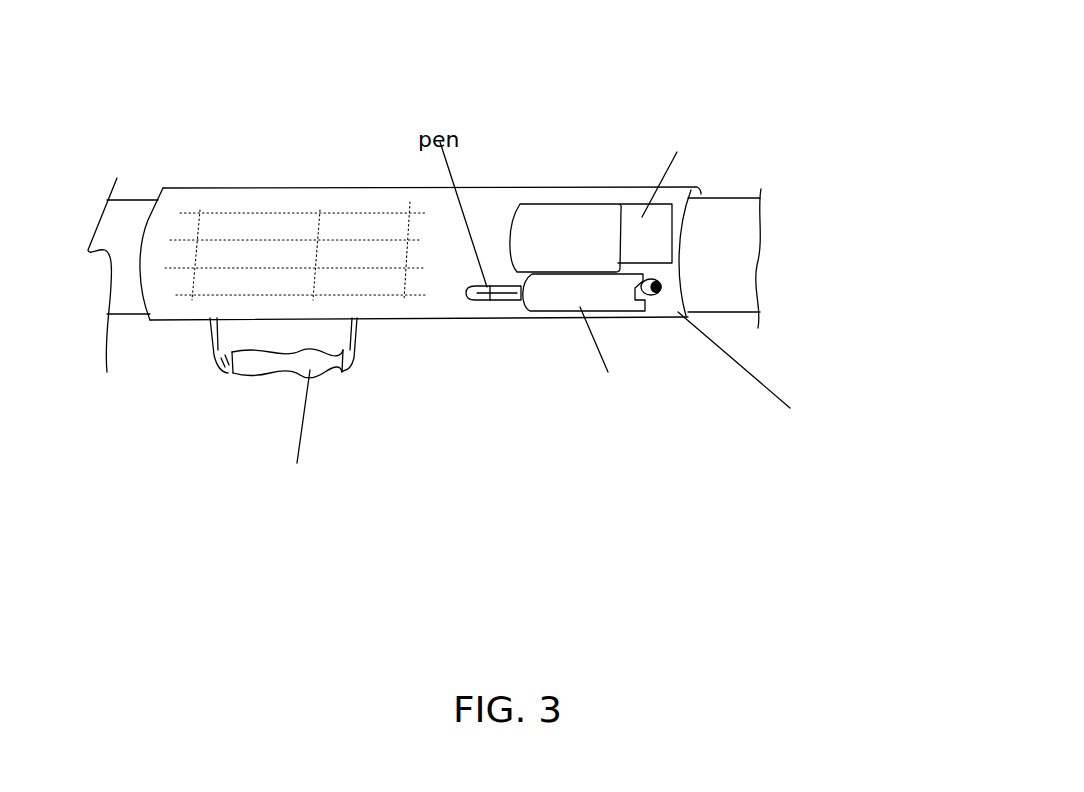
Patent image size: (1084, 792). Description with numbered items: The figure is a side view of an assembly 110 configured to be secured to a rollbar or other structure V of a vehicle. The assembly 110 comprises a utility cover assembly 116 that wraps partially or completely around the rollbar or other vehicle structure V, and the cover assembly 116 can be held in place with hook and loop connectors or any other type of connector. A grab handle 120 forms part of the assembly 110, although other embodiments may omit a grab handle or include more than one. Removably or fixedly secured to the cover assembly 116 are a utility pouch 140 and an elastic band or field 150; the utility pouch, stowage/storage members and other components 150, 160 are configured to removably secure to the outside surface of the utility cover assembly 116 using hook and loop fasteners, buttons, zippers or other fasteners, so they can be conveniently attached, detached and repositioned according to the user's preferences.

The assembly 110 is at (527, 229).
The utility cover assembly 116 is at (310, 187).
The grab handle 120 is at (213, 395).
The utility pouch 140 is at (565, 203).
The elastic band or field 150 is at (632, 313).
The stowage/storage member 160 is at (365, 285).
The rollbar or other vehicle structure V is at (117, 222).